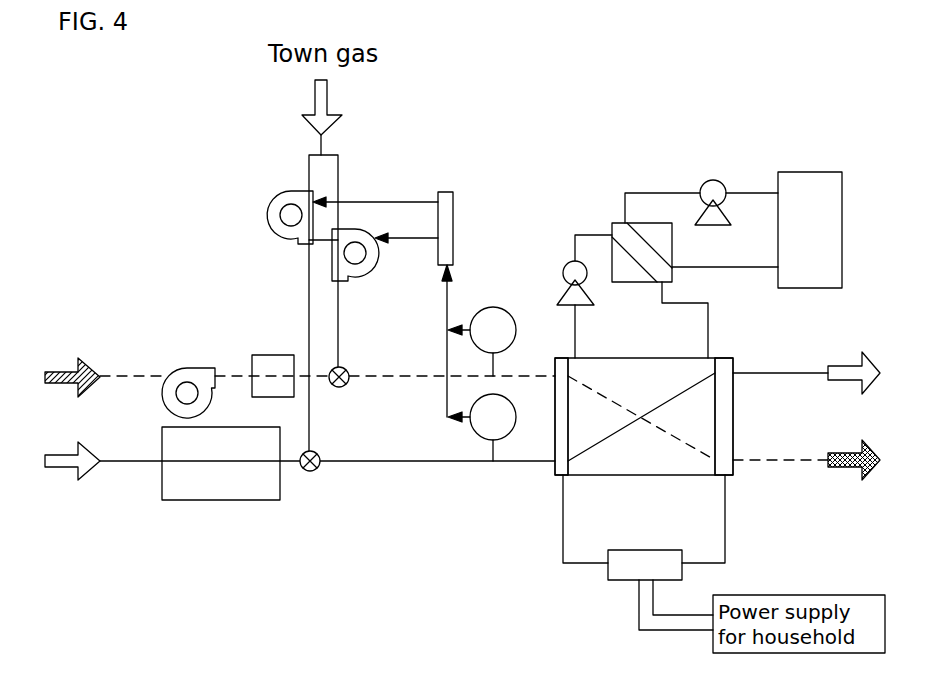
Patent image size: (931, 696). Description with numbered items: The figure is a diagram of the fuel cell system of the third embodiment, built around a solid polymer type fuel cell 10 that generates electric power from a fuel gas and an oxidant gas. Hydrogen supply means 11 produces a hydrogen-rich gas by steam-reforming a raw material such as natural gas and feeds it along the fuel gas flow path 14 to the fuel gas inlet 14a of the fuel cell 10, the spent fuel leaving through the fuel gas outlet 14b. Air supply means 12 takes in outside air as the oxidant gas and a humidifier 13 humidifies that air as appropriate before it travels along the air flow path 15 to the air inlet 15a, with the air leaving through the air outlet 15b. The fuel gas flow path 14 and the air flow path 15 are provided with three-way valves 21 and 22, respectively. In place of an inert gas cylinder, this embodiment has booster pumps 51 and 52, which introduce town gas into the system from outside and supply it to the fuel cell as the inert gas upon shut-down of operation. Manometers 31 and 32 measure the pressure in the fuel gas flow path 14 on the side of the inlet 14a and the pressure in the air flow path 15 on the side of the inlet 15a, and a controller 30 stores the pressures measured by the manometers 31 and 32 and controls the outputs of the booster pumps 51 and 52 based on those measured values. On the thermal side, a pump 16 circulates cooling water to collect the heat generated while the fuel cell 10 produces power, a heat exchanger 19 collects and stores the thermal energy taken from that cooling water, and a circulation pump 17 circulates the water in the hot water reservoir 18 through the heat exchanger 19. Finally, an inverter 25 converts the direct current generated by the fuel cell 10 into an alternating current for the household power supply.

The fuel cell 10 is at (652, 392).
The hydrogen supply means 11 is at (212, 500).
The air supply means 12 is at (186, 368).
The humidifier 13 is at (270, 355).
The fuel gas flow path 14 is at (120, 463).
The fuel gas inlet 14a is at (553, 463).
The fuel gas outlet 14b is at (733, 370).
The air flow path 15 is at (119, 376).
The air inlet 15a is at (553, 372).
The air outlet 15b is at (735, 463).
The pump 16 is at (586, 278).
The circulation pump 17 is at (713, 180).
The hot water reservoir 18 is at (832, 178).
The heat exchanger 19 is at (617, 224).
The three-way valve 21 is at (318, 454).
The three-way valve 22 is at (347, 369).
The inverter 25 is at (612, 582).
The controller 30 is at (445, 215).
The manometer 31 is at (476, 431).
The manometer 32 is at (497, 308).
The booster pump 51 is at (280, 192).
The booster pump 52 is at (353, 281).